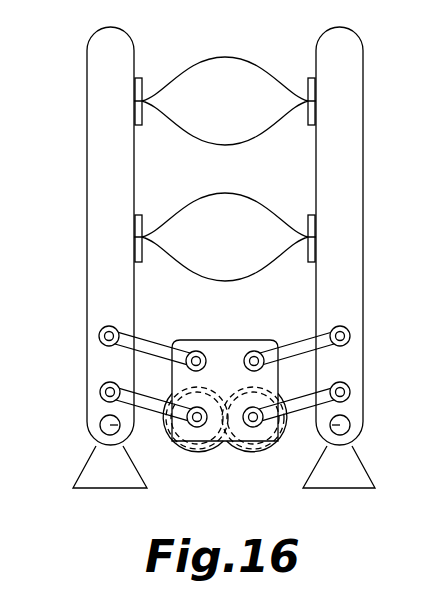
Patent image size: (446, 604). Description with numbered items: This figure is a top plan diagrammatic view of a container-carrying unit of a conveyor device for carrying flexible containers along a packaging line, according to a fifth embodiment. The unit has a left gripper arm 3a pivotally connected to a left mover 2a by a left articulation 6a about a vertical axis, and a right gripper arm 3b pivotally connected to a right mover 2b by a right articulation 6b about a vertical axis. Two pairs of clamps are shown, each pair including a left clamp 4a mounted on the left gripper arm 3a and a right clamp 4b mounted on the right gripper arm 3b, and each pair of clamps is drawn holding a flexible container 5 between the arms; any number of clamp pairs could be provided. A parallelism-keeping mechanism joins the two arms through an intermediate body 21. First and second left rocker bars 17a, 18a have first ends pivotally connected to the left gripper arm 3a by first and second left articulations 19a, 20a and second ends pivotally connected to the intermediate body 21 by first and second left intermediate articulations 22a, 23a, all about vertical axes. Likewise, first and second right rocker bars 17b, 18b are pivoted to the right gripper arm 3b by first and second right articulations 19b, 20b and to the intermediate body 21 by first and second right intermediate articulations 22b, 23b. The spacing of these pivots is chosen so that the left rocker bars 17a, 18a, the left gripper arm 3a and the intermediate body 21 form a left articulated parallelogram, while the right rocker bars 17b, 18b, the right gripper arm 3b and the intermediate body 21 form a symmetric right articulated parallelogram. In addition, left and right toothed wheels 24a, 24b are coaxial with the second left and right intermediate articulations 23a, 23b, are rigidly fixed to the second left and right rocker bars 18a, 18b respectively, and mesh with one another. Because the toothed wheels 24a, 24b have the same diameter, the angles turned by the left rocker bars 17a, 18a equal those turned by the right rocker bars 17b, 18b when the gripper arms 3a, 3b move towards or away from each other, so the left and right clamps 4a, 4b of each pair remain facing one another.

The left mover 2a is at (110, 478).
The right mover 2b is at (338, 483).
The left gripper arm 3a is at (97, 172).
The right gripper arm 3b is at (353, 172).
The left clamp 4a is at (139, 77).
The right clamp 4b is at (311, 77).
The flexible connecting member 5 is at (223, 57).
The left articulation 6a is at (103, 427).
The right articulation 6b is at (347, 427).
The first left rocker bar 17a is at (153, 340).
The first right rocker bar 17b is at (295, 342).
The second left rocker bar 18a is at (150, 396).
The second right rocker bar 18b is at (300, 397).
The first left articulation 19a is at (105, 328).
The first right articulation 19b is at (345, 328).
The second left articulation 20a is at (100, 392).
The second right articulation 20b is at (350, 392).
The intermediate body 21 is at (221, 340).
The first left intermediate articulation 22a is at (191, 352).
The first right intermediate articulation 22b is at (258, 352).
The second left intermediate articulation 23a is at (177, 445).
The second right intermediate articulation 23b is at (273, 445).
The left toothed wheel 24a is at (204, 453).
The right toothed wheel 24b is at (246, 453).